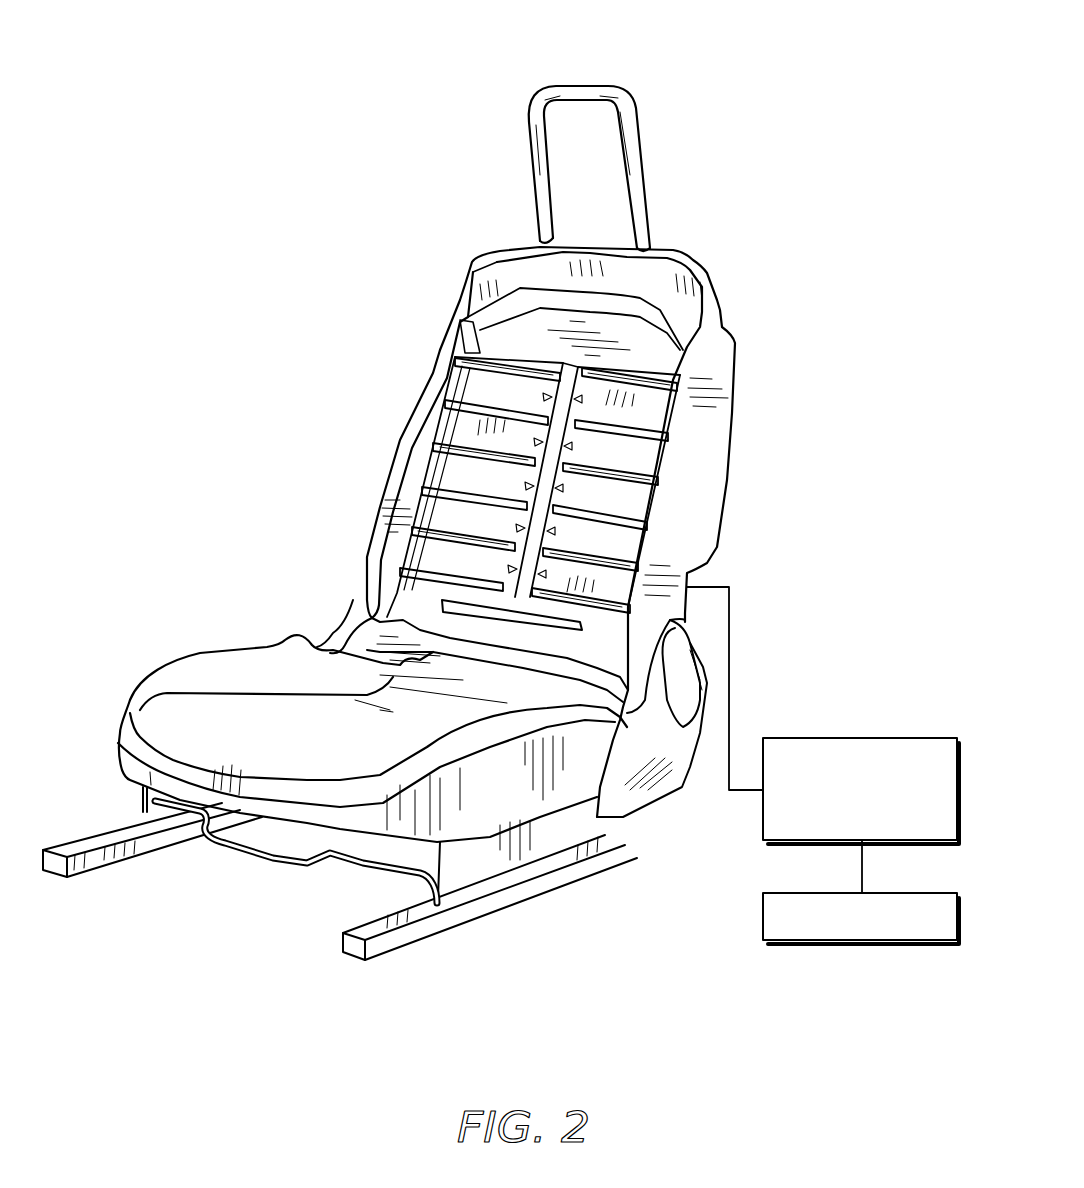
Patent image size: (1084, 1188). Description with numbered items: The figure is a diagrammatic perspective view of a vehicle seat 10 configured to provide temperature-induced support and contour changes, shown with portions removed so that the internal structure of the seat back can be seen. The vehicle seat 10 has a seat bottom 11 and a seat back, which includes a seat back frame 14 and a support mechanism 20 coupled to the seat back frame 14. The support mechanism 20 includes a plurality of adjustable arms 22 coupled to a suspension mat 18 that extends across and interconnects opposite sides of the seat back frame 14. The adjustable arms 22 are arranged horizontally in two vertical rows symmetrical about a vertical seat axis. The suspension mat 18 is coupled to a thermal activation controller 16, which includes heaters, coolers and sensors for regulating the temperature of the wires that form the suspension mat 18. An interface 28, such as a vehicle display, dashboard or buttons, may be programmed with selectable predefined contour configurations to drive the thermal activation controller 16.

The vehicle seat 10 is at (693, 107).
The seat bottom 11 is at (527, 928).
The seat back frame 14 is at (703, 312).
The thermal activation controller 16 is at (772, 403).
The suspension mat 18 is at (637, 450).
The support mechanism 20 is at (802, 447).
The adjustable arms 22 is at (437, 442).
The interface 28 is at (820, 893).